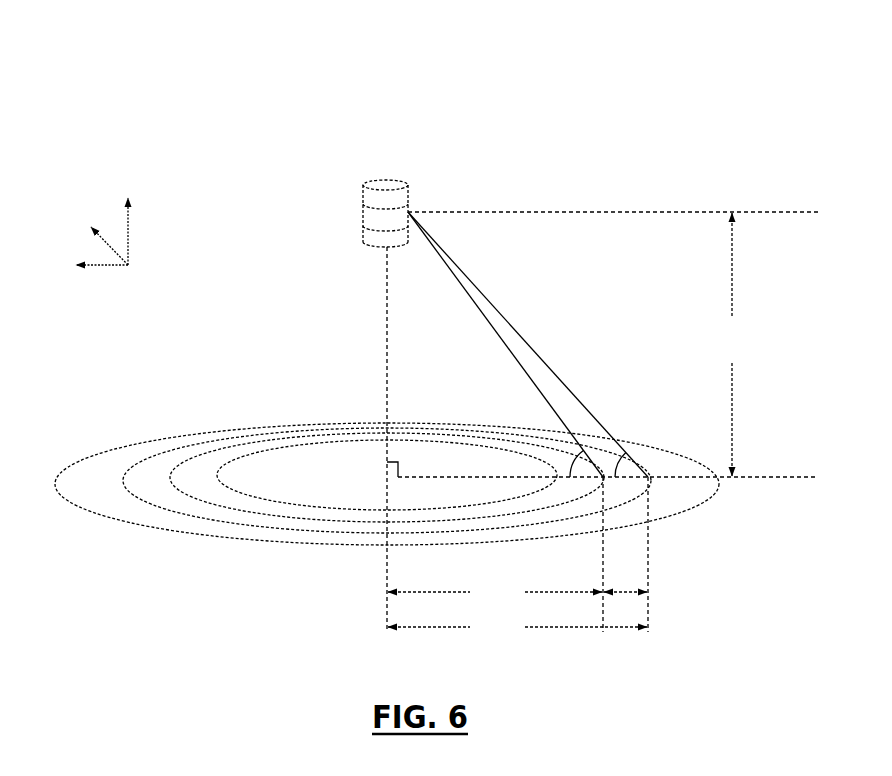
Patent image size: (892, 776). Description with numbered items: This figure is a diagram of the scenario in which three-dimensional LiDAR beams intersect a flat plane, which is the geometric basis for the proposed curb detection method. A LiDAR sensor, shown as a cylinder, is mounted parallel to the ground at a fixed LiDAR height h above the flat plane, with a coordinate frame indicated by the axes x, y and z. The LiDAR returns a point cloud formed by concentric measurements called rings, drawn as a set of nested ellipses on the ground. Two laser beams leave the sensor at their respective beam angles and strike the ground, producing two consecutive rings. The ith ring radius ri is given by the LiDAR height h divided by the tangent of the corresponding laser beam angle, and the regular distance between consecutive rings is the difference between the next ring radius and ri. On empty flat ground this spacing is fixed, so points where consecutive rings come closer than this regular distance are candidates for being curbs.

The LiDAR height h is at (731, 344).
The ith ring radius ri is at (495, 592).
The x axis x is at (100, 232).
The y axis y is at (90, 262).
The z axis z is at (130, 215).